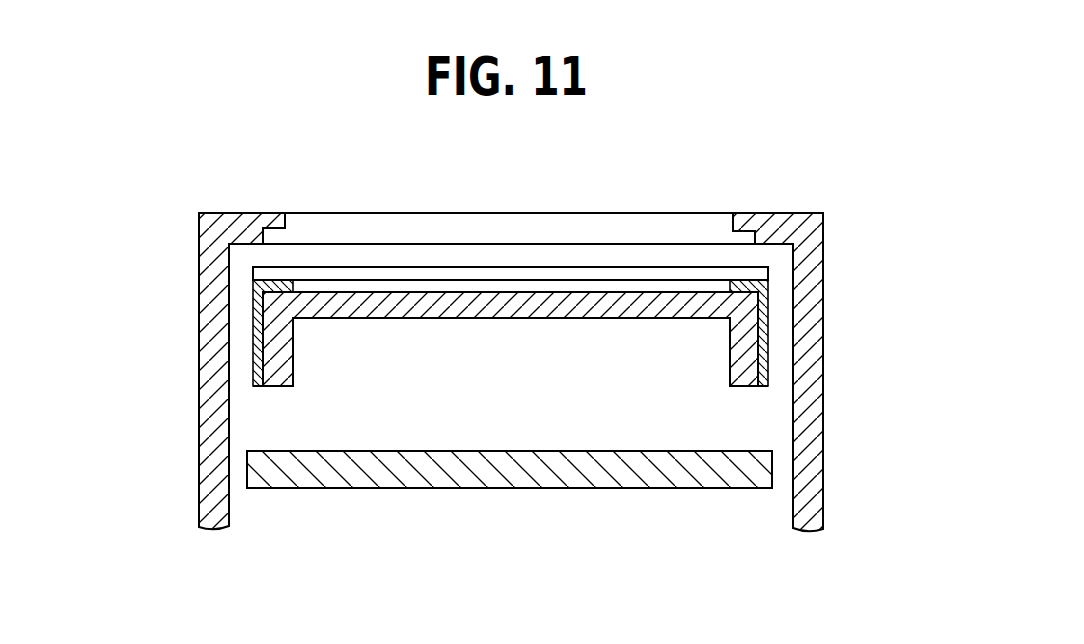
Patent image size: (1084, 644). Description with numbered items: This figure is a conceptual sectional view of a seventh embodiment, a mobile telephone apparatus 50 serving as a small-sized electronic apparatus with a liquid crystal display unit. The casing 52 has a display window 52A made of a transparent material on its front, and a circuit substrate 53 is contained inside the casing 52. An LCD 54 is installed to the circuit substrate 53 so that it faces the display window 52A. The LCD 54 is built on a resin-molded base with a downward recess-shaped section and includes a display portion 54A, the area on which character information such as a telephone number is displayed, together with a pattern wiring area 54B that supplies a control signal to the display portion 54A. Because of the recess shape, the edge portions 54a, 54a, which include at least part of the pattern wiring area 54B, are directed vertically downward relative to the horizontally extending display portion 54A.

The mobile telephone apparatus 50 is at (806, 168).
The casing 52 is at (192, 455).
The display window 52A is at (377, 222).
The circuit substrate 53 is at (539, 477).
The LCD 54 is at (557, 256).
The display portion 54A is at (507, 283).
The pattern wiring area 54B is at (253, 350).
The edge portions 54a is at (290, 385).